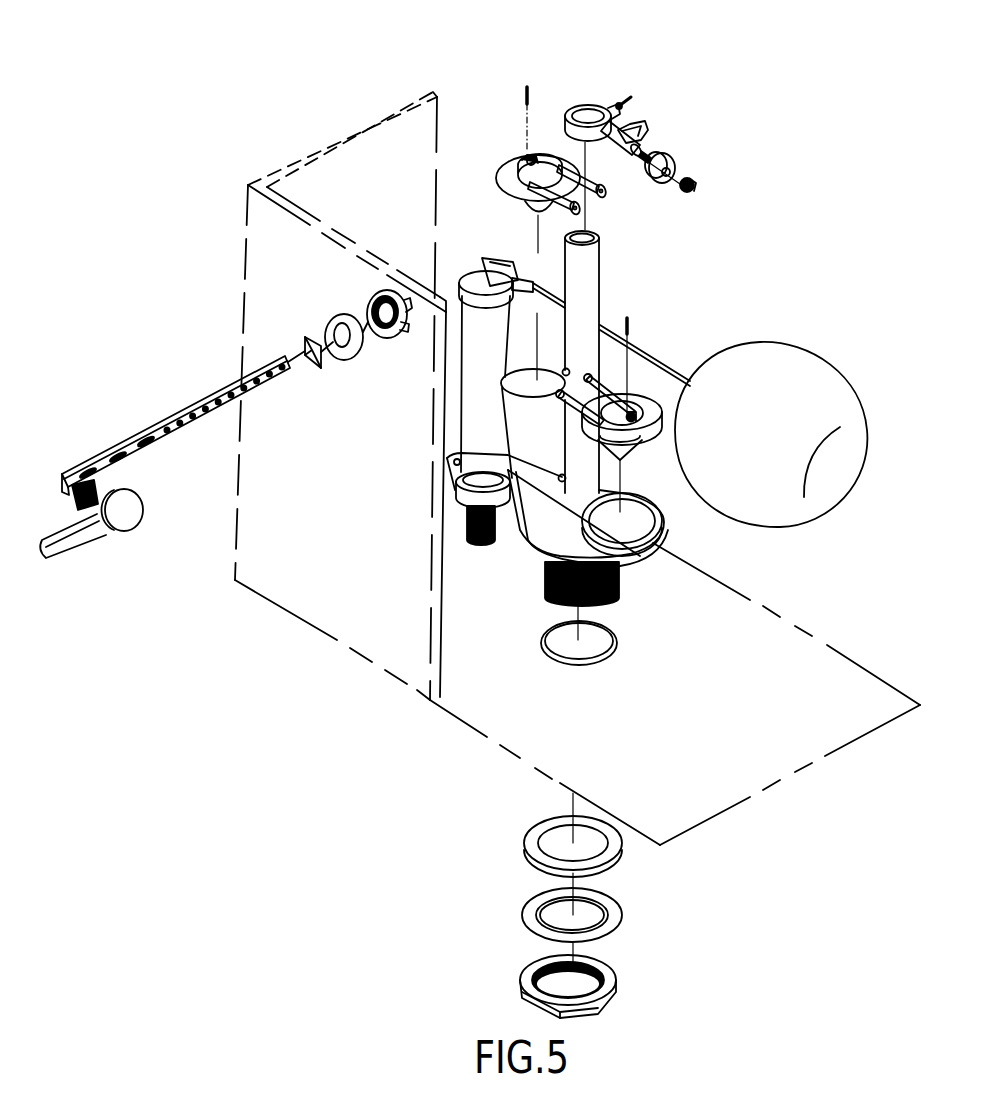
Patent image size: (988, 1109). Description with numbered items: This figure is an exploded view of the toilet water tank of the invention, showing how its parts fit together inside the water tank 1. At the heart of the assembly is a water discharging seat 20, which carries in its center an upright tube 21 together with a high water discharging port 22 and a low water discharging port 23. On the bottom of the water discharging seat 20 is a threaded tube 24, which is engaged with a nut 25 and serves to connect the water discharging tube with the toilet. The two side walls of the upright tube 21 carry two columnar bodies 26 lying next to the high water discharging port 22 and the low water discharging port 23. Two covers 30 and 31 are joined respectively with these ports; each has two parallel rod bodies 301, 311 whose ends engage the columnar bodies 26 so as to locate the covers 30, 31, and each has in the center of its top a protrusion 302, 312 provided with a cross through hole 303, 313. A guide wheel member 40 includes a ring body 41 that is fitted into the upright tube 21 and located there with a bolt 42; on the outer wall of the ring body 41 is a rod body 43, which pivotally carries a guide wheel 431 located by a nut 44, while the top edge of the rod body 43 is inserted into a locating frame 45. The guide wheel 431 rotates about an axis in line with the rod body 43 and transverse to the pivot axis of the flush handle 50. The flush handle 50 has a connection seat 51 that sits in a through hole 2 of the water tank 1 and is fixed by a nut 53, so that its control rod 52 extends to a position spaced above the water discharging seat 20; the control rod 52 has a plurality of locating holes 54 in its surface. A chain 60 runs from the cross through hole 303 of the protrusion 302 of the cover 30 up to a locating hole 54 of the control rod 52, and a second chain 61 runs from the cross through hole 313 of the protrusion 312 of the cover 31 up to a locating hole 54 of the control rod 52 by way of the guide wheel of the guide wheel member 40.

The water tank 1 is at (248, 185).
The through hole 2 is at (303, 343).
The water discharging seat 20 is at (537, 518).
The upright tube 21 is at (573, 273).
The high water discharging port 22 is at (500, 383).
The low water discharging port 23 is at (640, 528).
The threaded tube 24 is at (547, 588).
The nut 25 is at (618, 972).
The columnar bodies 26 is at (567, 372).
The cover 30 is at (505, 181).
The rod bodies 301 is at (600, 196).
The protrusion 302 is at (535, 153).
The cross through hole 303 is at (522, 160).
The cover 31 is at (642, 443).
The rod bodies 311 is at (620, 373).
The protrusion 312 is at (637, 412).
The cross through hole 313 is at (645, 452).
The guide wheel member 40 is at (717, 197).
The ring body 41 is at (594, 103).
The bolt 42 is at (630, 97).
The rod body 43 is at (612, 148).
The guide wheel 431 is at (678, 157).
The nut 44 is at (693, 180).
The locating frame 45 is at (641, 125).
The flush handle 50 is at (93, 533).
The connection seat 51 is at (67, 505).
The control rod 52 is at (163, 423).
The nut 53 is at (375, 298).
The locating holes 54 is at (200, 425).
The chain 60 is at (527, 86).
The chain 61 is at (627, 317).